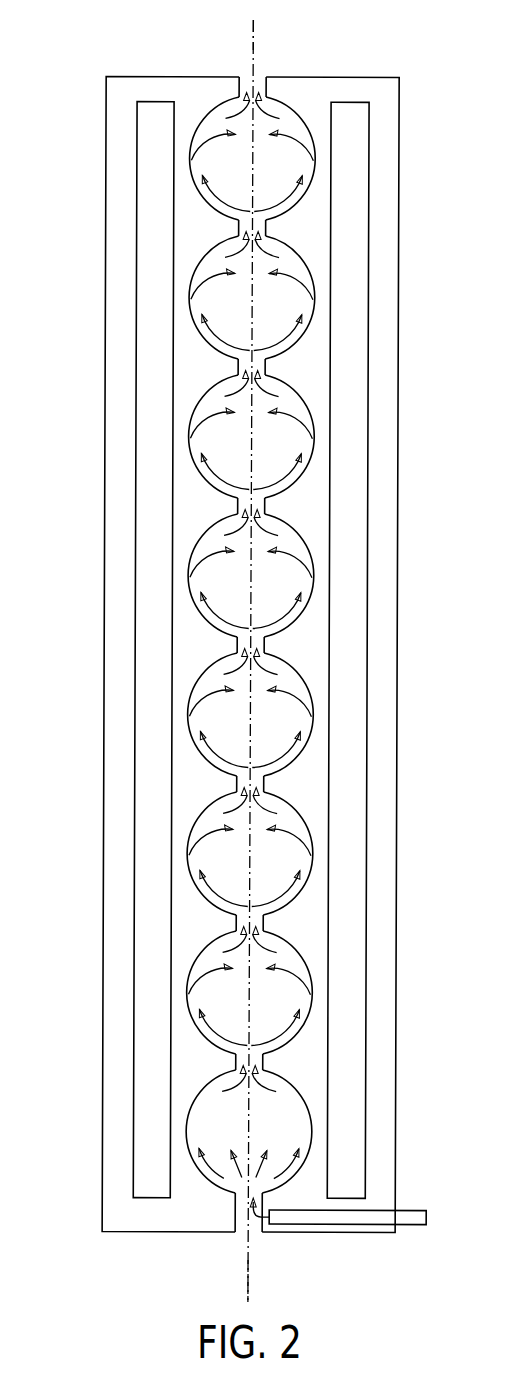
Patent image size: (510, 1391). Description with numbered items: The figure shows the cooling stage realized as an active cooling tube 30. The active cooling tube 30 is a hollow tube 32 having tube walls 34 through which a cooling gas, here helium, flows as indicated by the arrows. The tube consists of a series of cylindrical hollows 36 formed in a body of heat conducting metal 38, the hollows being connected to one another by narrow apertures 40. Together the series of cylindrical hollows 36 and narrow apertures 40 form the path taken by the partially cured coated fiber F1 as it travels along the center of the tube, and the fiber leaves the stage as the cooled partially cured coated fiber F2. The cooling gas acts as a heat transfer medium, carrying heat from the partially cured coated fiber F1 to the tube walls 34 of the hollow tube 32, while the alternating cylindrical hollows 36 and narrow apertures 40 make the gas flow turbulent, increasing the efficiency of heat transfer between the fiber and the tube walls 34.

The active cooling tube 30 is at (58, 148).
The hollow tube 32 is at (397, 163).
The tube walls 34 is at (297, 202).
The series of cylindrical hollows 36 is at (203, 268).
The body of heat conducting metal 38 is at (182, 363).
The narrow apertures 40 is at (237, 508).
The partially cured coated fiber F1 is at (250, 50).
The cooled partially cured coated fiber F2 is at (248, 1257).